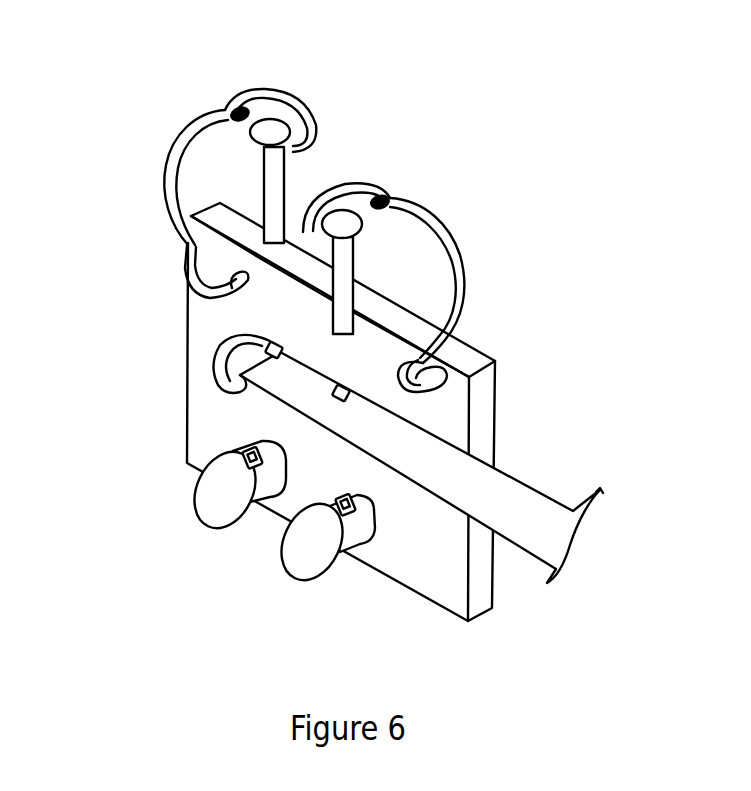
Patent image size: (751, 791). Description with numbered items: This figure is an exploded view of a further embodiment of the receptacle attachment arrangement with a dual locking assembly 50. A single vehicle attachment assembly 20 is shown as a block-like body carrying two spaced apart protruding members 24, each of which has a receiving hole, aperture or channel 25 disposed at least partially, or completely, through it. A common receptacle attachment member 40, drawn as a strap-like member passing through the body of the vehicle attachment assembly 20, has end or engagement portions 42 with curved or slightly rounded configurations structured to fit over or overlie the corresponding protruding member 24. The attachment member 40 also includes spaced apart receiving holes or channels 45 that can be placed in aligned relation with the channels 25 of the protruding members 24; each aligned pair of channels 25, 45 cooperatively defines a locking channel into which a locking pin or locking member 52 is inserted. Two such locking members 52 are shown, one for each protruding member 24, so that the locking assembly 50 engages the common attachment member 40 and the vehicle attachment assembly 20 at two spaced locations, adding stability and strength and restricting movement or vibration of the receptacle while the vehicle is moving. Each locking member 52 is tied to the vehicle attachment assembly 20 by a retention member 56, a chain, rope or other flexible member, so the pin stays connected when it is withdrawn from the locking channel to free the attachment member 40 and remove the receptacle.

The vehicle attachment assembly 20 is at (487, 418).
The protruding member 24 is at (220, 496).
The receiving channel 25 is at (247, 455).
The receptacle attachment member 40 is at (545, 497).
The engagement portion 42 is at (233, 388).
The receiving channel 45 is at (276, 347).
The locking assembly 50 is at (357, 150).
The locking member 52 is at (265, 176).
The retention member 56 is at (167, 180).